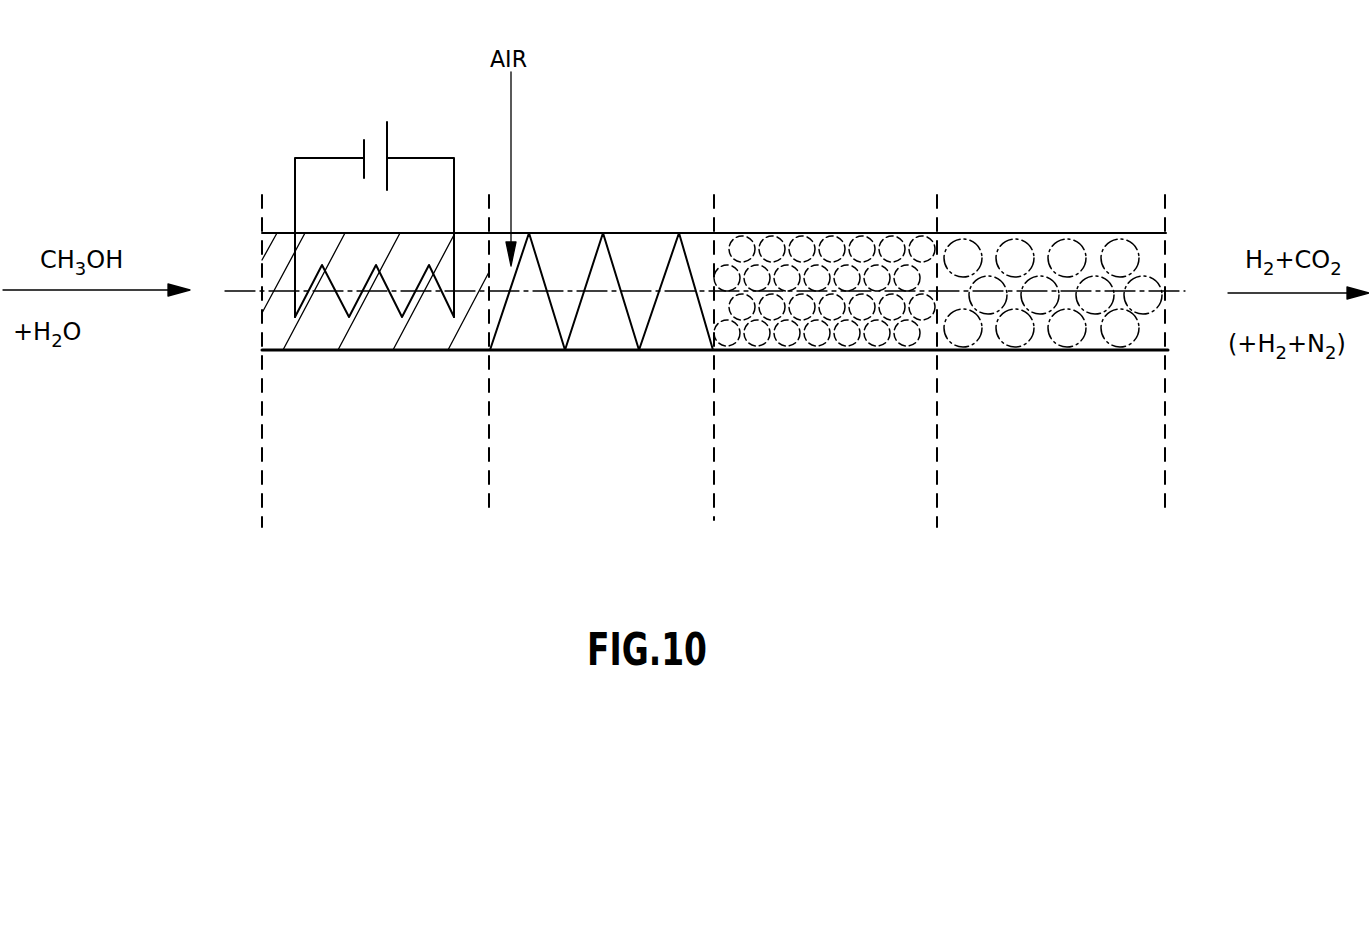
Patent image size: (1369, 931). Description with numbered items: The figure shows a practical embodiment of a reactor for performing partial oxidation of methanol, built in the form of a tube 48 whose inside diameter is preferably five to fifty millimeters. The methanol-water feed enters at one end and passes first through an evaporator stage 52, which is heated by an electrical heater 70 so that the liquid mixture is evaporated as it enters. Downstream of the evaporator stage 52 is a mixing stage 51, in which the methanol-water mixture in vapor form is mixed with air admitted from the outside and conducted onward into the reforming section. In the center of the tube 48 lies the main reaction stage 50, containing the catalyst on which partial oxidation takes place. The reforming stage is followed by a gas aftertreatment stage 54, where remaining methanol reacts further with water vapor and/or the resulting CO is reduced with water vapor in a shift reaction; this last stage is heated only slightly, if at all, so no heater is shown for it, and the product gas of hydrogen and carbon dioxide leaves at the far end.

The tube 48 is at (785, 233).
The main reaction stage 50 is at (815, 493).
The mixing stage 51 is at (592, 493).
The evaporator stage 52 is at (365, 493).
The gas aftertreatment stage 54 is at (1052, 493).
The electrical heater 70 is at (295, 172).